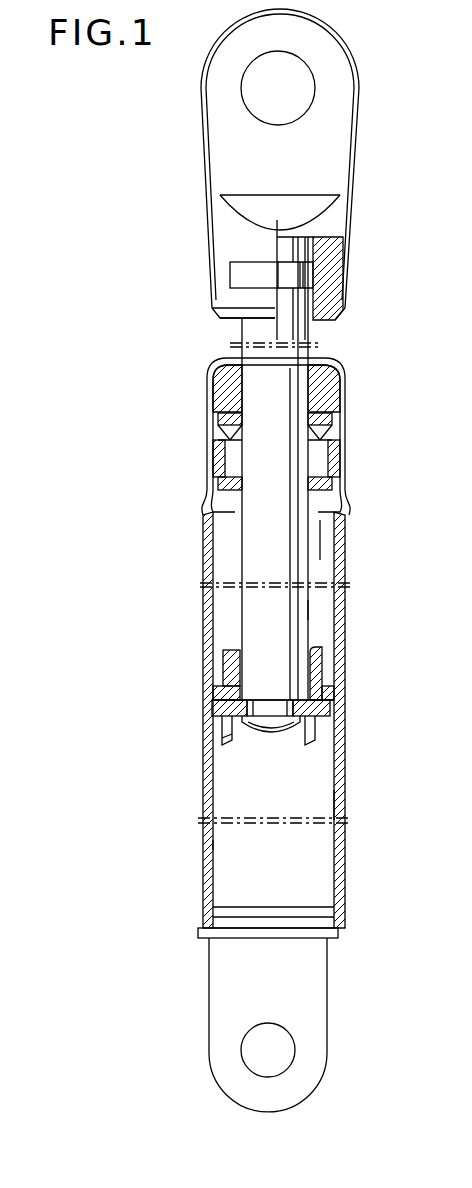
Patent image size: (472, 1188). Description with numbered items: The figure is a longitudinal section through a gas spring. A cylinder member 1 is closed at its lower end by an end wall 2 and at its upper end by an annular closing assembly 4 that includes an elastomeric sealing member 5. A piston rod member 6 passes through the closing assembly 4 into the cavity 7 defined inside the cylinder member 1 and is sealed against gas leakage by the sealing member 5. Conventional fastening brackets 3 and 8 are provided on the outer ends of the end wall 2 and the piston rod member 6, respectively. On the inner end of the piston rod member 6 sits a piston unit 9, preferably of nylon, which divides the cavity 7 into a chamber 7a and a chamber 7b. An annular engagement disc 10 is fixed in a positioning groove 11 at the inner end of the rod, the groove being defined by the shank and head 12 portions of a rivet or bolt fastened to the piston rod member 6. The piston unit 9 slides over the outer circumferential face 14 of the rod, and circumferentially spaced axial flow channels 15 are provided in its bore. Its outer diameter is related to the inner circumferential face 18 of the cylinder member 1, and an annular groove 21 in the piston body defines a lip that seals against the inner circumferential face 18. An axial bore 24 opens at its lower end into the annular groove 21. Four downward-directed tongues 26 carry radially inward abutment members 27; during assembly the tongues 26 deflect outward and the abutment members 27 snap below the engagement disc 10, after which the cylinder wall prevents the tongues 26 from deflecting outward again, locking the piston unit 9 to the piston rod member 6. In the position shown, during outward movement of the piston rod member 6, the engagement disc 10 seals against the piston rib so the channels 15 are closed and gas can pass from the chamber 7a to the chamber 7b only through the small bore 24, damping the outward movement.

The cylinder member 1 is at (344, 850).
The end wall 2 is at (300, 940).
The fastening bracket 3 is at (312, 1008).
The annular closing assembly 4 is at (340, 376).
The sealing member 5 is at (338, 437).
The piston rod member 6 is at (256, 522).
The cavity 7 is at (320, 774).
The chamber 7a is at (322, 546).
The chamber 7b is at (213, 840).
The fastening bracket 8 is at (334, 212).
The piston unit 9 is at (215, 690).
The annular engagement disc 10 is at (222, 708).
The positioning groove 11 is at (270, 700).
The shank and head 12 is at (270, 728).
The outer circumferential face 14 is at (312, 607).
The axial flow channels 15 is at (318, 642).
The inner circumferential face 18 is at (336, 808).
The annular groove 21 is at (222, 672).
The axial bore 24 is at (320, 696).
The tongues 26 is at (230, 728).
The abutment members 27 is at (234, 744).